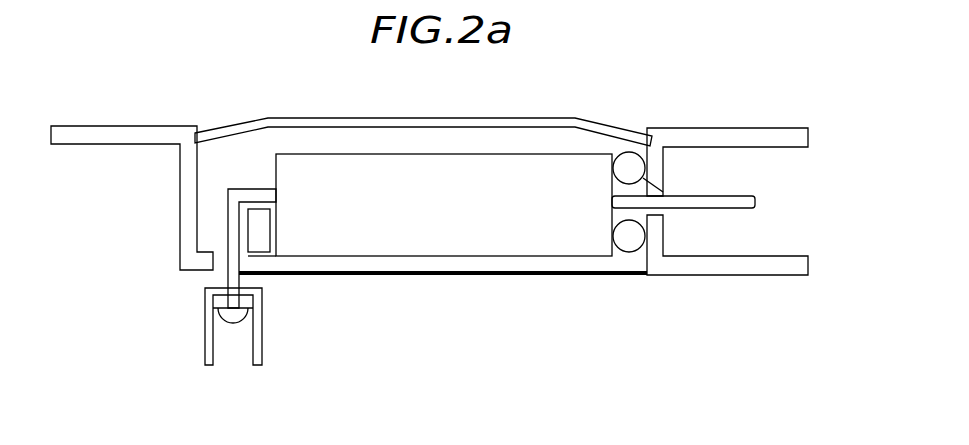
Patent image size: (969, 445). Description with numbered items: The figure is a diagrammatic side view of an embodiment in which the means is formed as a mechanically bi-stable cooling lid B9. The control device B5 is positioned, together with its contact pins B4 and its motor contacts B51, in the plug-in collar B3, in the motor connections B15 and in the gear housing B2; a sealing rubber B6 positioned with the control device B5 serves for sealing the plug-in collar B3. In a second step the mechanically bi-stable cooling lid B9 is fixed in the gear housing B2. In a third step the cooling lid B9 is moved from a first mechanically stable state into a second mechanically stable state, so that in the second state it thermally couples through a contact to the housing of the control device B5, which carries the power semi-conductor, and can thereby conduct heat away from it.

The gear housing B2 is at (117, 137).
The mechanically bi-stable cooling lid B9 is at (408, 118).
The control device B5 is at (443, 238).
The motor contacts B51 is at (228, 235).
The motor connections B15 is at (233, 358).
The sealing rubber B6 is at (628, 238).
The plug-in collar B3 is at (735, 275).
The contact pins B4 is at (755, 201).